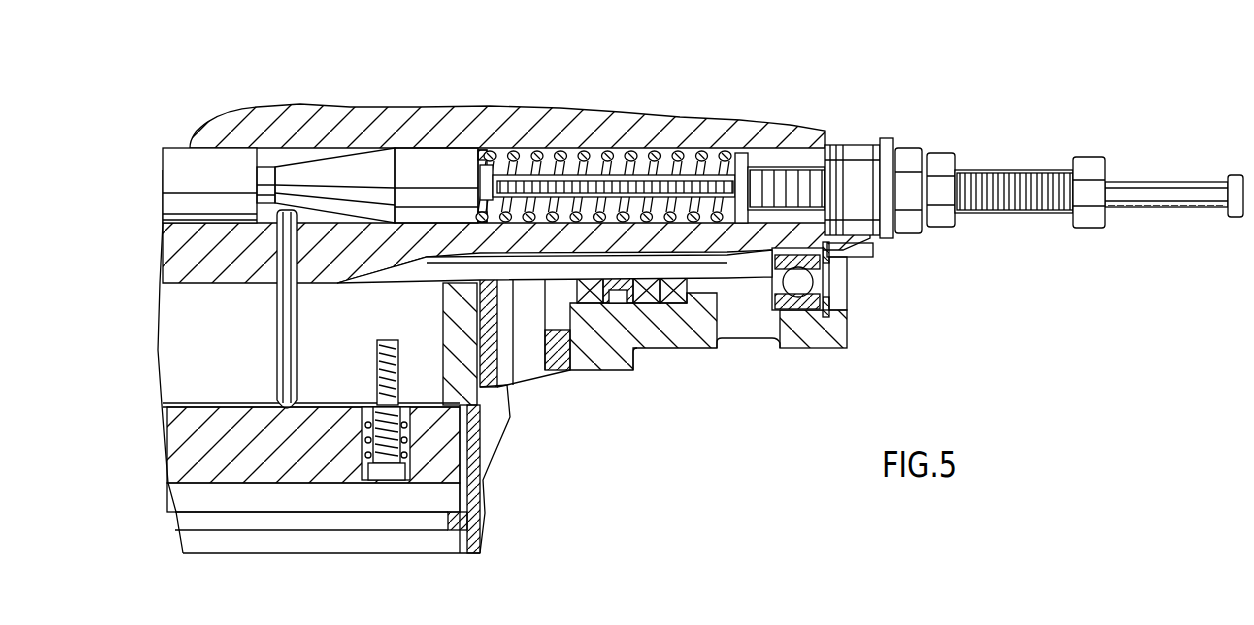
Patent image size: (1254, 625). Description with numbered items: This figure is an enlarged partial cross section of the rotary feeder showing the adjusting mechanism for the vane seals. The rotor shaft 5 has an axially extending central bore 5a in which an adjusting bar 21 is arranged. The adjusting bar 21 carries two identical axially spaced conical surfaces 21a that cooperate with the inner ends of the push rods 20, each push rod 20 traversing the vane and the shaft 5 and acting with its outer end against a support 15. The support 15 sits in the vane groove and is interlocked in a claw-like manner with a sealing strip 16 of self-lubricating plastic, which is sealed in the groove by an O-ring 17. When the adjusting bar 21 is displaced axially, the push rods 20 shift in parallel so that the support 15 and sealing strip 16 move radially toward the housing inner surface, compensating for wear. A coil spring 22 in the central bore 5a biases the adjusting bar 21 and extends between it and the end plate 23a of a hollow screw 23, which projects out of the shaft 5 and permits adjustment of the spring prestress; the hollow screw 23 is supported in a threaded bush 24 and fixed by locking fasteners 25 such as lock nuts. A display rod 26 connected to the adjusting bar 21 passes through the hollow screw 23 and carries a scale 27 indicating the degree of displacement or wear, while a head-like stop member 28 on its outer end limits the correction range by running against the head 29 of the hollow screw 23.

The shaft 5 is at (420, 125).
The central bore 5a is at (790, 160).
The support 15 is at (190, 460).
The sealing strip 16 is at (190, 497).
The O-ring 17 is at (467, 524).
The push rod 20 is at (282, 363).
The adjusting bar 21 is at (190, 165).
The conical surface 21a is at (312, 165).
The coil spring 22 is at (530, 155).
The hollow screw 23 is at (1010, 170).
The end plate 23a is at (742, 155).
The threaded bush 24 is at (862, 152).
The locking fasteners 25 is at (945, 158).
The display rod 26 is at (575, 155).
The scale 27 is at (1172, 190).
The stop member 28 is at (1236, 176).
The head 29 is at (1088, 163).